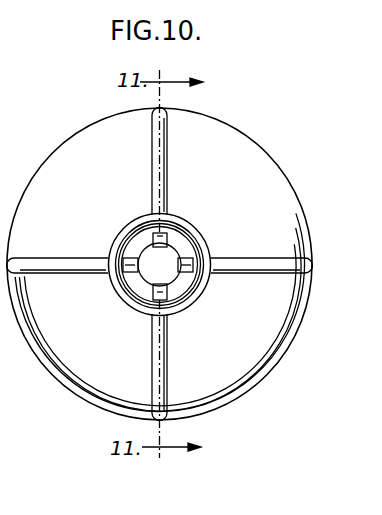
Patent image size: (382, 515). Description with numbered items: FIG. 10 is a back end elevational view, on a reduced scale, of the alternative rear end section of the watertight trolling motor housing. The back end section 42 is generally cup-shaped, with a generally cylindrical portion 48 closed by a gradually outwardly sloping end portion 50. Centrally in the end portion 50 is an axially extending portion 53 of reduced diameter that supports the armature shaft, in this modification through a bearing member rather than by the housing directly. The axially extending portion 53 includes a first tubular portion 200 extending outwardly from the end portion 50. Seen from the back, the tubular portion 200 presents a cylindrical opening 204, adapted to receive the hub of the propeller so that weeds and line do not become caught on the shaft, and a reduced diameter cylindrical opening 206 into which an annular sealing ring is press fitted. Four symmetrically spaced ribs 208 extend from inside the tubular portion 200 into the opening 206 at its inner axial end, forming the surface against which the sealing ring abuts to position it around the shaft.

The back end section 42 is at (301, 141).
The cylindrical portion 48 is at (82, 395).
The end portion 50 is at (57, 168).
The axially extending portion 53 is at (118, 267).
The first tubular portion 200 is at (110, 243).
The reduced diameter cylindrical opening 206 is at (181, 244).
The cylindrical opening 204 is at (130, 298).
The ribs 208 is at (150, 240).